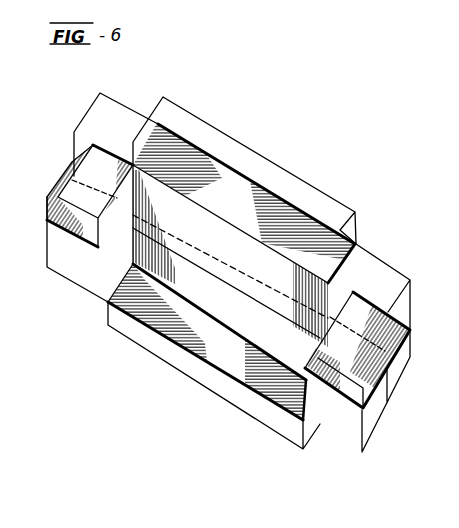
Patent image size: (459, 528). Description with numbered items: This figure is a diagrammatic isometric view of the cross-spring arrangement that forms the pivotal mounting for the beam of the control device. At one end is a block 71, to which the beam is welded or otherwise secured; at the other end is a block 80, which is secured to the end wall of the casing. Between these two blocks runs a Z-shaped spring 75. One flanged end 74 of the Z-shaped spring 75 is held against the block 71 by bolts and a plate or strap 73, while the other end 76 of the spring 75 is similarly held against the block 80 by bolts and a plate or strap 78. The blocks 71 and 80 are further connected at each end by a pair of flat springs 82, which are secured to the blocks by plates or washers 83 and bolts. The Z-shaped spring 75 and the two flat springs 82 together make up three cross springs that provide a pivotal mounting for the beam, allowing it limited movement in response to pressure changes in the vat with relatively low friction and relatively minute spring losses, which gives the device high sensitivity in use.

The block 71 is at (92, 110).
The plate or strap 73 is at (197, 122).
The flanged end 74 is at (270, 190).
The Z-shaped spring 75 is at (325, 292).
The other end 76 is at (128, 317).
The plate or strap 78 is at (265, 415).
The block 80 is at (57, 263).
The flat springs 82 is at (84, 248).
The plates or washers 83 is at (63, 177).